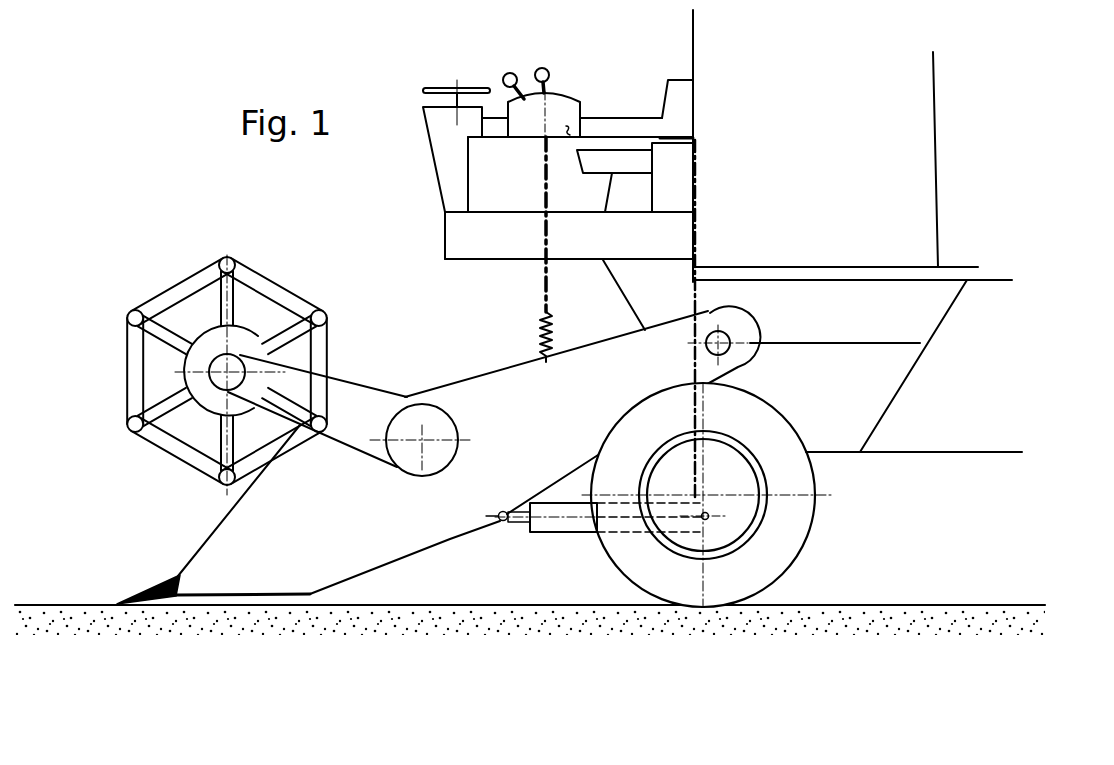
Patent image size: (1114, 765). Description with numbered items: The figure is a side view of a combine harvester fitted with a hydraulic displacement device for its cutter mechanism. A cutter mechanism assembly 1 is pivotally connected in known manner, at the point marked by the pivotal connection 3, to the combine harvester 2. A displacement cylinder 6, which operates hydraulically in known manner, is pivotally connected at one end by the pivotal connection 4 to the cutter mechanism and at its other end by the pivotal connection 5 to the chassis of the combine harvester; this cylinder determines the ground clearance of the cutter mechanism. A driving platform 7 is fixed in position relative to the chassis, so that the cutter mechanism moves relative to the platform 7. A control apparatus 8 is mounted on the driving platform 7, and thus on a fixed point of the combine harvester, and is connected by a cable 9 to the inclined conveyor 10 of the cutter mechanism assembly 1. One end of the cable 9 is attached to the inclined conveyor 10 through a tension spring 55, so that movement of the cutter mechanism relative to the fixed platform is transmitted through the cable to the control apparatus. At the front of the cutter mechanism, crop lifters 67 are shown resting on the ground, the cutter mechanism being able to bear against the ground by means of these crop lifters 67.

The cutter mechanism assembly 1 is at (412, 572).
The combine harvester 2 is at (895, 433).
The pivotal connection 3 is at (722, 352).
The pivotal connection 4 is at (505, 522).
The pivotal connection 5 is at (707, 520).
The displacement cylinder 6 is at (583, 534).
The driving platform 7 is at (620, 126).
The control apparatus 8 is at (535, 110).
The cable 9 is at (540, 182).
The inclined conveyor 10 is at (278, 560).
The tension spring 55 is at (542, 340).
The crop lifters 67 is at (133, 607).